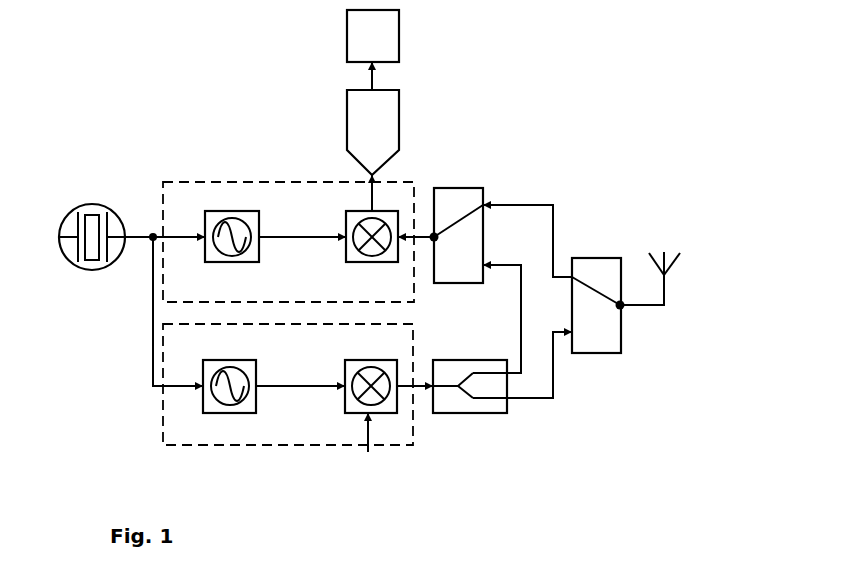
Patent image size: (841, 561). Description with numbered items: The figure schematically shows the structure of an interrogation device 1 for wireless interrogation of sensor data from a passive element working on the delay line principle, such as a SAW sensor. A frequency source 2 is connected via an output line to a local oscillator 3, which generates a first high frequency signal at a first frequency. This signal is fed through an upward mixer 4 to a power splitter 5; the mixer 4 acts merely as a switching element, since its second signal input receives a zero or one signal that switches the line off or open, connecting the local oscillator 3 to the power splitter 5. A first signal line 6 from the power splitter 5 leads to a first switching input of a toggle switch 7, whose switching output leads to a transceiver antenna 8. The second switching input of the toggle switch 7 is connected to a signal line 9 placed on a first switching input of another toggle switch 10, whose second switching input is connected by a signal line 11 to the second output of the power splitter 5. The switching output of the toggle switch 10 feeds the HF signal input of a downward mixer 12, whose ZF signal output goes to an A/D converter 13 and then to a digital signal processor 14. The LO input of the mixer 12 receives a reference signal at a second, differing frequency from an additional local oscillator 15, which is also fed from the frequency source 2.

The interrogation device 1 is at (150, 115).
The frequency source 2 is at (75, 212).
The local oscillator 3 is at (202, 408).
The upward mixer 4 is at (352, 408).
The power splitter 5 is at (475, 406).
The first signal line 6 is at (553, 398).
The toggle switch 7 is at (602, 342).
The transceiver antenna 8 is at (664, 292).
The signal line 9 is at (528, 203).
The toggle switch 10 is at (457, 190).
The signal line 11 is at (520, 298).
The downward mixer 12 is at (353, 210).
The A/D converter 13 is at (383, 120).
The digital signal processor 14 is at (357, 30).
The additional local oscillator 15 is at (232, 213).